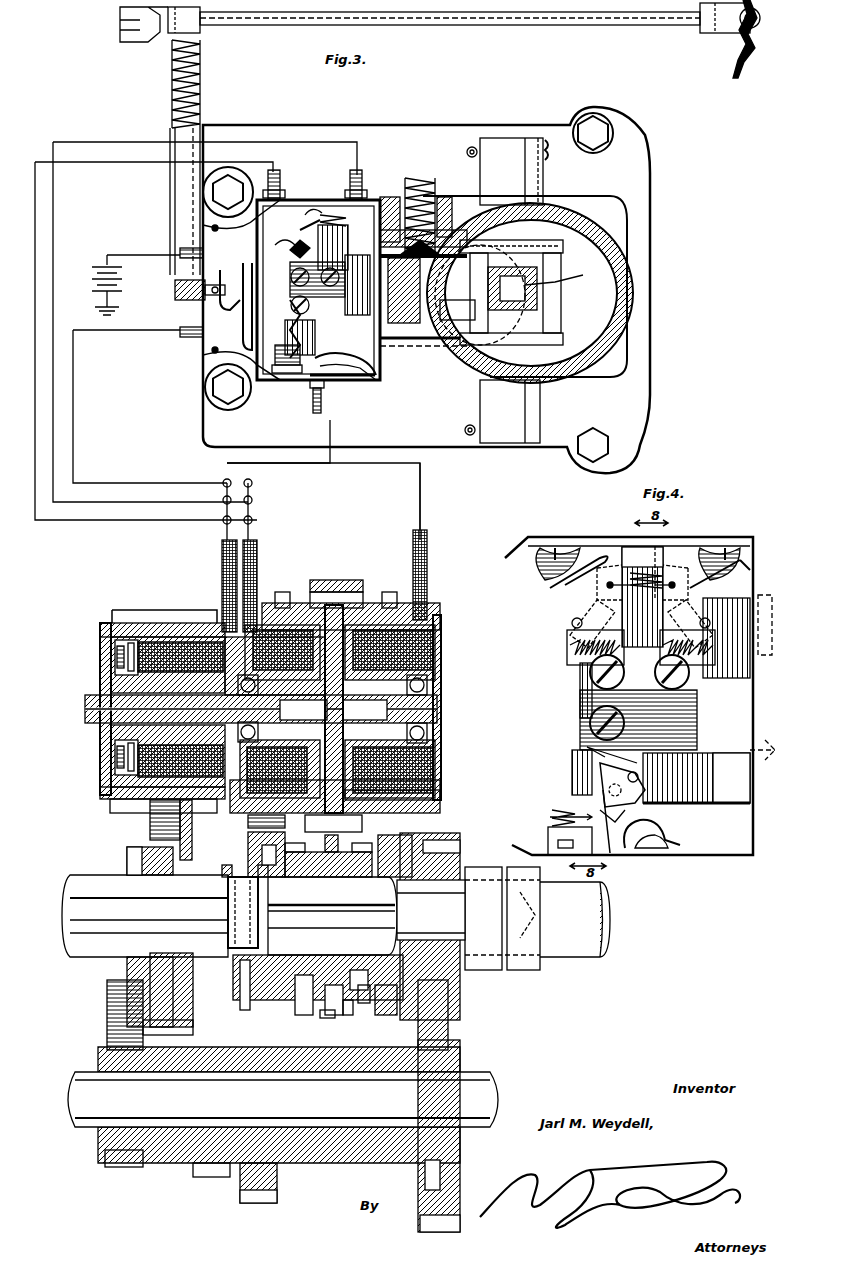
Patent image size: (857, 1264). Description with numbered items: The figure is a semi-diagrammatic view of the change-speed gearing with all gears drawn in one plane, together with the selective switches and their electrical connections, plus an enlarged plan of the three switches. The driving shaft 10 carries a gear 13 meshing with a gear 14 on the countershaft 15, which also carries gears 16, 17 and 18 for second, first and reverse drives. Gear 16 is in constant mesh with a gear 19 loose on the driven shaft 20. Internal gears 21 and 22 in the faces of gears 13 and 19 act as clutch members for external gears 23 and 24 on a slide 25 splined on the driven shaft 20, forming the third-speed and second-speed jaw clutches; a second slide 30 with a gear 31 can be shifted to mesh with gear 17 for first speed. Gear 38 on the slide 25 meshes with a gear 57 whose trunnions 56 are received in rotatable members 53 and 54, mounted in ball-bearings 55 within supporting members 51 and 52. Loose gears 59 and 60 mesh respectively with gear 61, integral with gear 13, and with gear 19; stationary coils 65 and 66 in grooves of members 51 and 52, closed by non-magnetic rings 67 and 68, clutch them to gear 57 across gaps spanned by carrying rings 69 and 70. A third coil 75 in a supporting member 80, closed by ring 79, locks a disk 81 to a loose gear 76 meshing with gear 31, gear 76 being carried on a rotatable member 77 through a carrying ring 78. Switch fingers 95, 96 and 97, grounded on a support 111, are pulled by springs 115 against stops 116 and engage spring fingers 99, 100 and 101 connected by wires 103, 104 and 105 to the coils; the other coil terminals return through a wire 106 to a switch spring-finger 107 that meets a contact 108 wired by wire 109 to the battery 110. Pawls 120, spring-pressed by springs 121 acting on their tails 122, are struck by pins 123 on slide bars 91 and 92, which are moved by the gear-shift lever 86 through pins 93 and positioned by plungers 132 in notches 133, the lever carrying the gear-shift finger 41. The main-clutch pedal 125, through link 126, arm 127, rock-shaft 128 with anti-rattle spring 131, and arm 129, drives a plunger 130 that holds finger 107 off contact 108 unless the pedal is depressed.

In FIG. 3, the driving shaft 10 is at (570, 960).
In FIG. 3, the gear 13 is at (465, 860).
In FIG. 3, the gear 14 is at (418, 1222).
In FIG. 3, the countershaft 15 is at (345, 1165).
In FIG. 3, the gear 16 is at (265, 1205).
In FIG. 3, the gear 17 is at (210, 1180).
In FIG. 3, the gear 18 is at (125, 1170).
In FIG. 3, the gear 19 is at (230, 985).
In FIG. 3, the driven shaft 20 is at (70, 965).
In FIG. 3, the internal gear 21 is at (400, 840).
In FIG. 3, the internal gear 22 is at (262, 855).
In FIG. 3, the external gear 23 is at (360, 990).
In FIG. 3, the external gear 24 is at (297, 1010).
In FIG. 3, the slide 25 is at (348, 1015).
In FIG. 3, the second slide 30 is at (127, 855).
In FIG. 3, the gear 31 is at (145, 1040).
In FIG. 3, the gear 38 is at (332, 1015).
In FIG. 3, the gear-shift finger 41 is at (564, 276).
In FIG. 3, the supporting member 51 is at (441, 640).
In FIG. 3, the supporting member 52 is at (225, 820).
In FIG. 3, the rotatable member 53 is at (440, 700).
In FIG. 3, the rotatable member 54 is at (305, 592).
In FIG. 3, the ball-bearings 55 is at (440, 733).
In FIG. 3, the trunnions 56 is at (333, 710).
In FIG. 3, the gear 57 is at (345, 590).
In FIG. 3, the loose gear 59 is at (390, 592).
In FIG. 3, the loose gear 60 is at (285, 590).
In FIG. 3, the gear 61 is at (390, 1015).
In FIG. 3, the clutch coil 65 is at (435, 625).
In FIG. 3, the clutch coil 66 is at (275, 605).
In FIG. 3, the ring 67 is at (435, 750).
In FIG. 3, the ring 68 is at (265, 795).
In FIG. 3, the carrying ring 69 is at (440, 797).
In FIG. 3, the carrying ring 70 is at (330, 598).
In FIG. 3, the synchronizing coil 75 is at (160, 640).
In FIG. 3, the loose gear 76 is at (98, 800).
In FIG. 3, the rotatable member 77 is at (100, 745).
In FIG. 3, the carrying ring 78 is at (100, 768).
In FIG. 3, the stationary non-magnetic ring 79 is at (120, 815).
In FIG. 3, the stationary supporting member 80 is at (190, 640).
In FIG. 3, the disk 81 is at (98, 661).
In FIG. 3, the gear-shift lever 86 is at (537, 292).
In FIG. 3, the slide bar 91 is at (565, 250).
In FIG. 4, the slide bar 91 is at (726, 642).
In FIG. 3, the slide bar 92 is at (563, 338).
In FIG. 4, the slide bar 92 is at (718, 740).
In FIG. 3, the pins 93 is at (470, 306).
In FIG. 3, the switch finger 95 is at (355, 220).
In FIG. 4, the switch finger 95 is at (680, 640).
In FIG. 3, the switch finger 96 is at (288, 250).
In FIG. 4, the switch finger 96 is at (570, 645).
In FIG. 3, the switch finger 97 is at (300, 380).
In FIG. 4, the switch finger 97 is at (612, 855).
In FIG. 3, the spring finger 99 is at (398, 195).
In FIG. 4, the spring finger 99 is at (735, 585).
In FIG. 3, the spring finger 100 is at (298, 212).
In FIG. 4, the spring finger 100 is at (565, 580).
In FIG. 3, the spring finger 101 is at (368, 378).
In FIG. 4, the spring finger 101 is at (670, 835).
In FIG. 3, the wire 103 is at (360, 150).
In FIG. 3, the wire 104 is at (128, 165).
In FIG. 3, the wire 105 is at (330, 418).
In FIG. 3, the wire 106 is at (143, 480).
In FIG. 3, the switch spring-finger 107 is at (292, 310).
In FIG. 3, the switch contact 108 is at (236, 258).
In FIG. 3, the wire 109 is at (132, 255).
In FIG. 3, the battery 110 is at (122, 277).
In FIG. 3, the stationary support 111 is at (290, 280).
In FIG. 4, the stationary support 111 is at (580, 705).
In FIG. 3, the spring 115 is at (355, 210).
In FIG. 4, the spring 115 is at (700, 552).
In FIG. 3, the stop 116 is at (318, 200).
In FIG. 4, the stop 116 is at (597, 546).
In FIG. 4, the operating pawl 120 is at (575, 610).
In FIG. 3, the spring 121 is at (340, 300).
In FIG. 4, the spring 121 is at (590, 695).
In FIG. 3, the tail 122 is at (290, 270).
In FIG. 4, the tail 122 is at (590, 672).
In FIG. 4, the operating pin 123 is at (642, 693).
In FIG. 3, the main-clutch pedal 125 is at (742, 60).
In FIG. 3, the link 126 is at (593, 28).
In FIG. 3, the arm 127 is at (118, 30).
In FIG. 3, the rock-shaft 128 is at (170, 72).
In FIG. 3, the arm 129 is at (180, 292).
In FIG. 3, the plunger 130 is at (178, 335).
In FIG. 3, the coil spring 131 is at (170, 100).
In FIG. 3, the plungers 132 is at (442, 195).
In FIG. 3, the positioning notches 133 is at (478, 275).